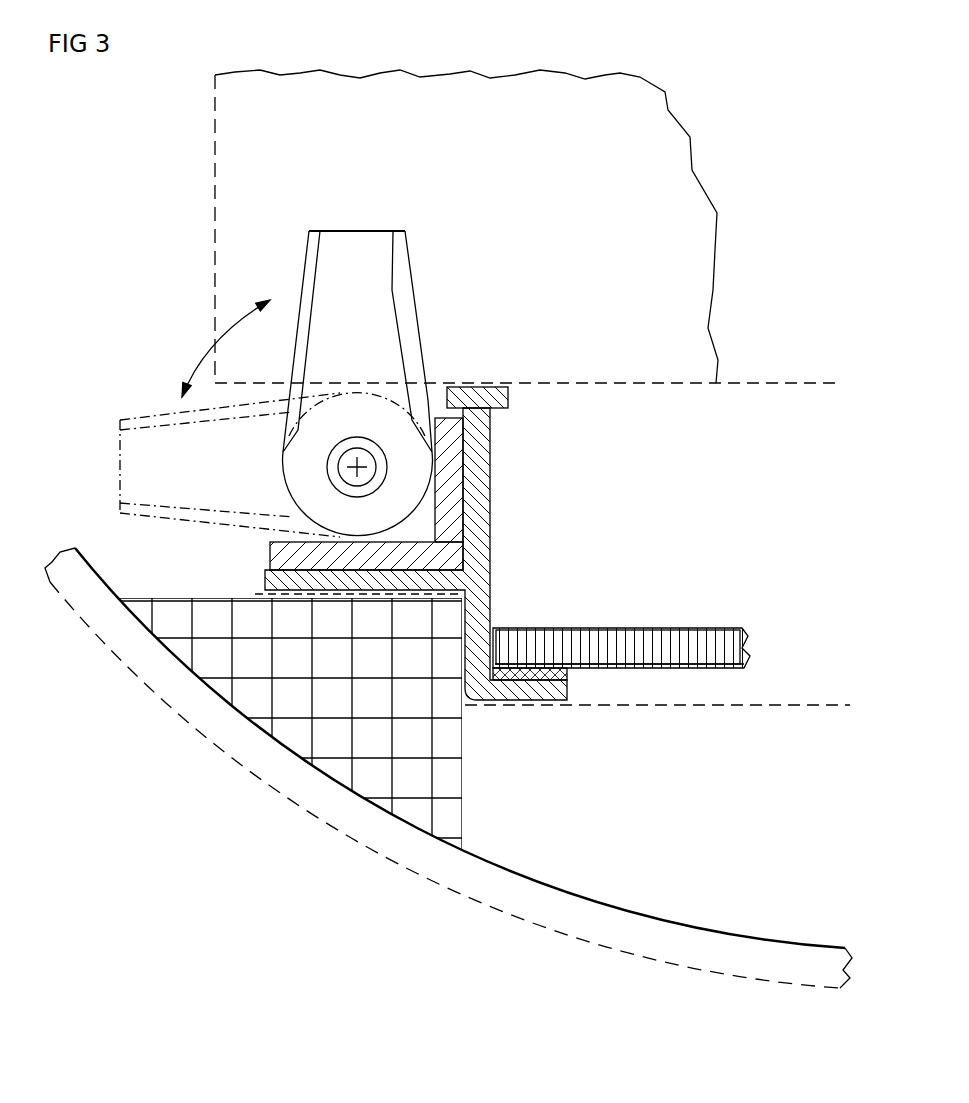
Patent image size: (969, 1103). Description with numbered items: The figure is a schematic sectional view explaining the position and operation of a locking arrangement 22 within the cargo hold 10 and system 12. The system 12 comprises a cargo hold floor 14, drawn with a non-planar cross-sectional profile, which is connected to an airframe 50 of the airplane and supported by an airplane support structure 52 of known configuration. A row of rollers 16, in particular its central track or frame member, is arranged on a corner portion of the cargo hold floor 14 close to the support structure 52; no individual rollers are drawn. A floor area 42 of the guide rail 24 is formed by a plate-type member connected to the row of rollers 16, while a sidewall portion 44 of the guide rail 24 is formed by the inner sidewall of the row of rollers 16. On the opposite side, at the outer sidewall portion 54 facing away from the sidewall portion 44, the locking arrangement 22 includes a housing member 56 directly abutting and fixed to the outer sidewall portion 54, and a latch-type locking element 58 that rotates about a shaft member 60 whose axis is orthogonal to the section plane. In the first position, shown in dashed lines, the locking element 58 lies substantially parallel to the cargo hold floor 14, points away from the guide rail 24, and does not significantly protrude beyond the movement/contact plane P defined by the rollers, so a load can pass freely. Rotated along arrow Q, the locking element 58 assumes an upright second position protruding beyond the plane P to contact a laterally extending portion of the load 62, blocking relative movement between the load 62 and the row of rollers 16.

The cargo hold 10 is at (138, 195).
The system 12 is at (121, 327).
The cargo hold floor 14 is at (800, 705).
The row of rollers 16 is at (500, 398).
The locking arrangement 22 is at (289, 265).
The guide rail 24 is at (731, 602).
The floor area 42 is at (655, 655).
The sidewall portion 44 is at (490, 437).
The airframe 50 is at (545, 925).
The airplane support structure 52 is at (330, 758).
The outer sidewall portion 54 is at (468, 470).
The housing member 56 is at (275, 560).
The locking element 58 is at (345, 285).
The shaft member 60 is at (335, 470).
The load 62 is at (712, 243).
The movement/contact plane P is at (786, 383).
The arrow Q is at (212, 347).